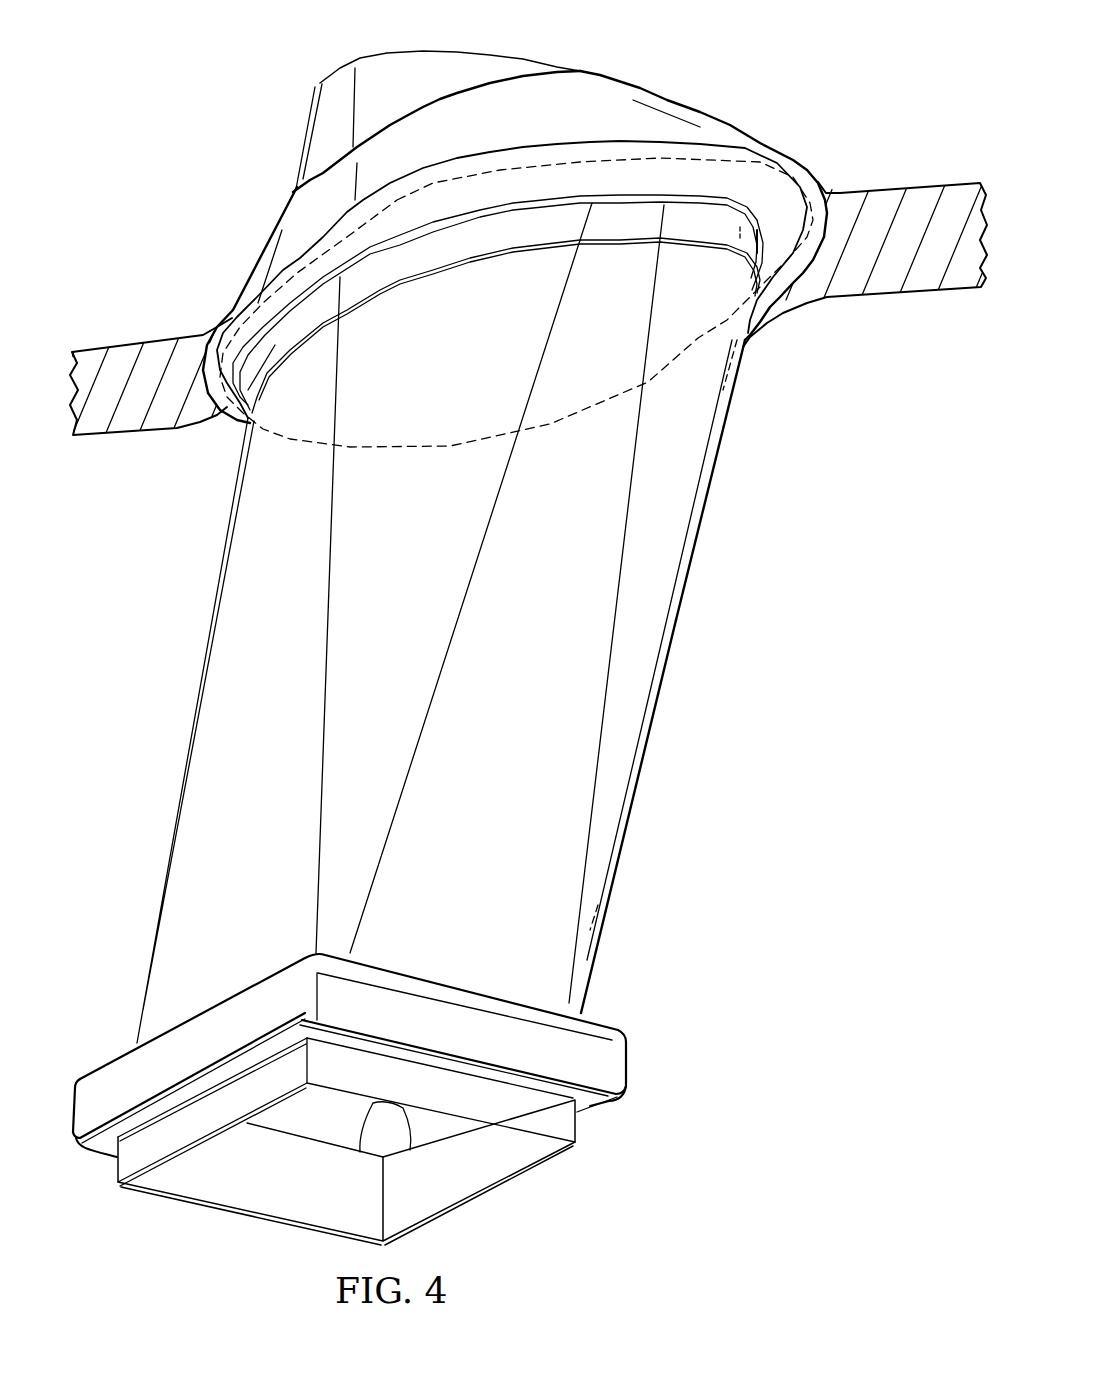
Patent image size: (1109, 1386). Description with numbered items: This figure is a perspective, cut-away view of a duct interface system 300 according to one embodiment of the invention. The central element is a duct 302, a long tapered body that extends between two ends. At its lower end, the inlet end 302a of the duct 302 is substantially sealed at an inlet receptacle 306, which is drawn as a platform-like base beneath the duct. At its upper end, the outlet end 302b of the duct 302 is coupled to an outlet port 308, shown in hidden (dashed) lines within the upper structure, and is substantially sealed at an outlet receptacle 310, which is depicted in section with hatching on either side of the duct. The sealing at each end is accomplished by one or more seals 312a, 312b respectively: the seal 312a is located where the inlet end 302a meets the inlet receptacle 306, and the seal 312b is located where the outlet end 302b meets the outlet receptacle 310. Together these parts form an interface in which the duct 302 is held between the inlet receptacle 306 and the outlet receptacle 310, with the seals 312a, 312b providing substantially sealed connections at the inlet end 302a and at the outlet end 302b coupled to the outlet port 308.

The duct interface system 300 is at (712, 57).
The duct 302 is at (541, 713).
The inlet end 302a is at (547, 978).
The outlet end 302b is at (690, 398).
The inlet receptacle 306 is at (627, 1073).
The outlet port 308 is at (430, 445).
The outlet receptacle 310 is at (890, 189).
The seal 312a is at (597, 1100).
The seal 312b is at (768, 182).